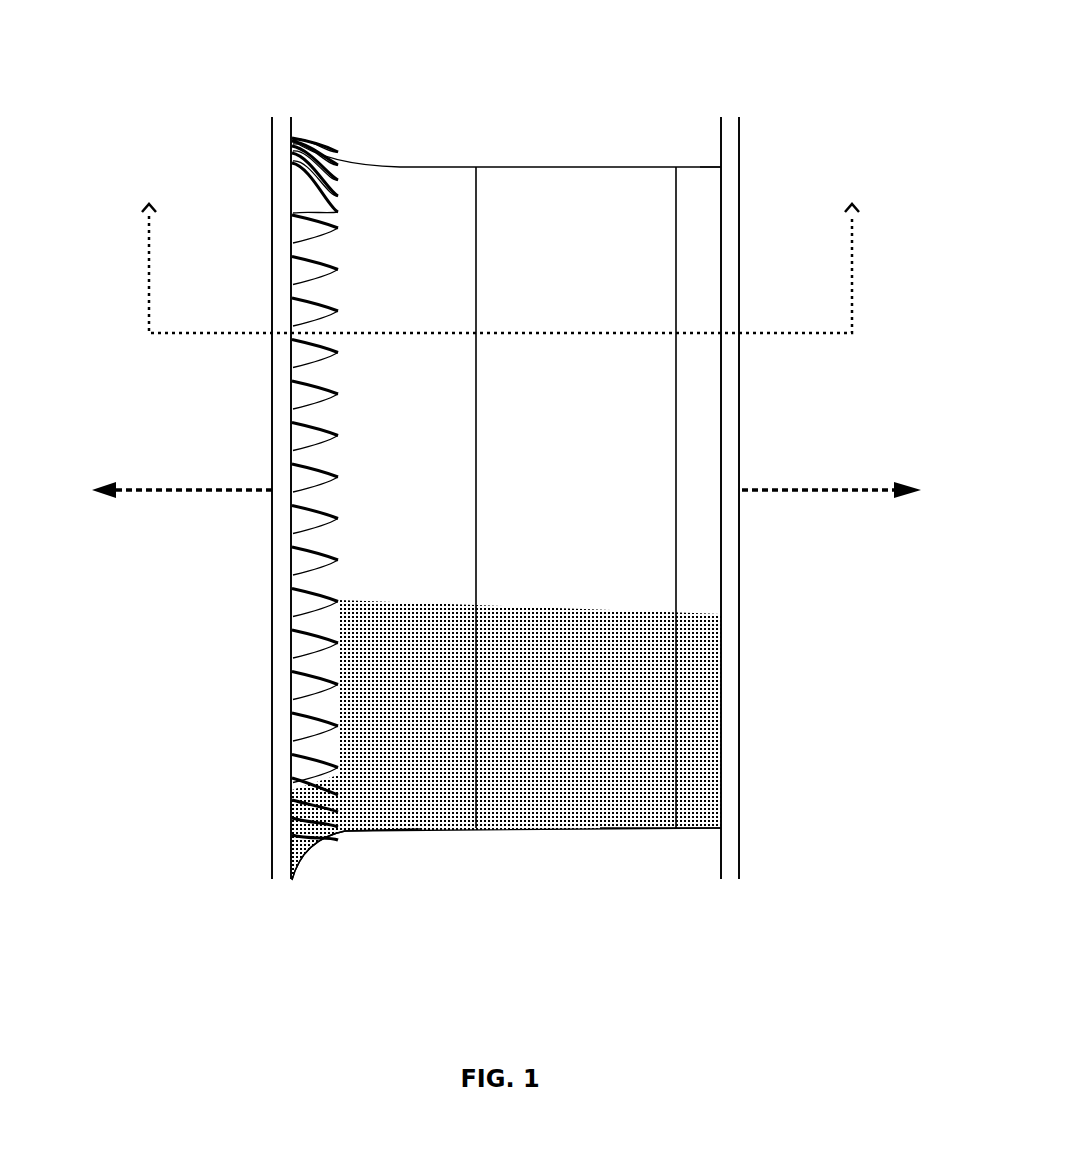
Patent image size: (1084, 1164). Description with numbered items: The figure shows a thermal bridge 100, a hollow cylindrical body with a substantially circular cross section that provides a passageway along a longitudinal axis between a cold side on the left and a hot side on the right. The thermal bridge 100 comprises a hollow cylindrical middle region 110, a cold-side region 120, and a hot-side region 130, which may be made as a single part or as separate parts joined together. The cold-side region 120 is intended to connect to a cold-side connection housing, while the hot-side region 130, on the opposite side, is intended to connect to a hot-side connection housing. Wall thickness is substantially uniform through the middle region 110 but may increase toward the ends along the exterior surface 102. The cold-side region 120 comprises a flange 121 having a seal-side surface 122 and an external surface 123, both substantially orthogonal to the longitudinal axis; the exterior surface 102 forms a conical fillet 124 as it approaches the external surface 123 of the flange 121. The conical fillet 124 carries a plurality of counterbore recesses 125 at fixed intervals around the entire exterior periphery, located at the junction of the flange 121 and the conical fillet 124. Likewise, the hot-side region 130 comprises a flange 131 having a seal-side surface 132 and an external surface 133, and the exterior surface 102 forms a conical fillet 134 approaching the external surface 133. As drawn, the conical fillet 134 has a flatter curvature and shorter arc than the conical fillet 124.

The thermal bridge 100 is at (483, 17).
The exterior surface 102 is at (574, 523).
The hollow cylindrical middle region 110 is at (550, 808).
The cold-side region 120 is at (408, 806).
The flange 121 is at (274, 752).
The seal-side surface 122 is at (242, 471).
The external surface 123 is at (320, 471).
The conical fillet 124 is at (312, 150).
The counterbore recesses 125 is at (304, 478).
The hot-side region 130 is at (698, 802).
The flange 131 is at (729, 750).
The seal-side surface 132 is at (768, 471).
The external surface 133 is at (694, 471).
The conical fillet 134 is at (712, 163).